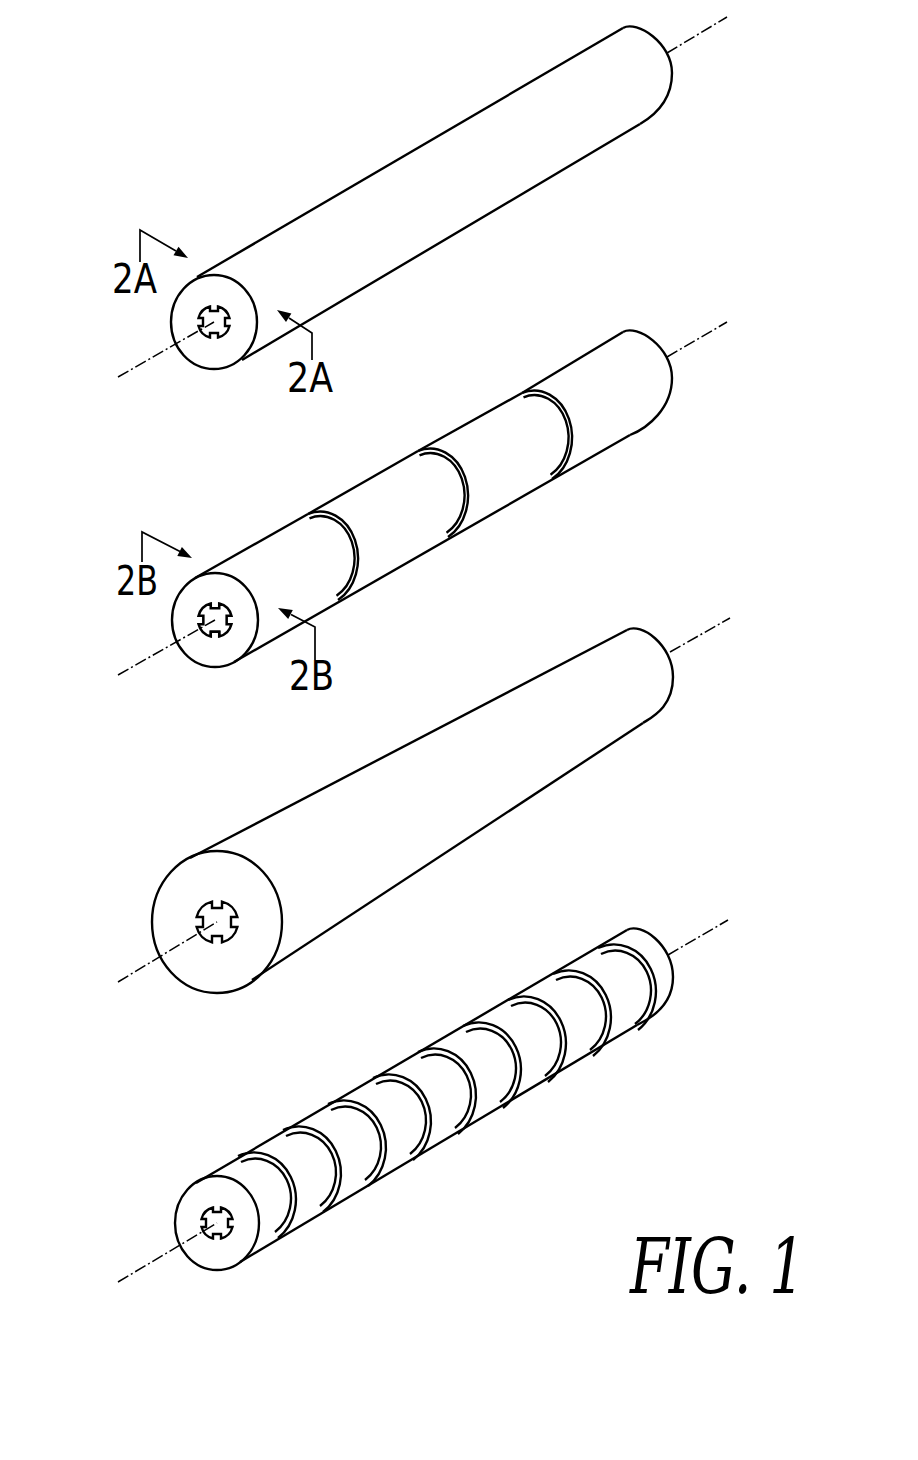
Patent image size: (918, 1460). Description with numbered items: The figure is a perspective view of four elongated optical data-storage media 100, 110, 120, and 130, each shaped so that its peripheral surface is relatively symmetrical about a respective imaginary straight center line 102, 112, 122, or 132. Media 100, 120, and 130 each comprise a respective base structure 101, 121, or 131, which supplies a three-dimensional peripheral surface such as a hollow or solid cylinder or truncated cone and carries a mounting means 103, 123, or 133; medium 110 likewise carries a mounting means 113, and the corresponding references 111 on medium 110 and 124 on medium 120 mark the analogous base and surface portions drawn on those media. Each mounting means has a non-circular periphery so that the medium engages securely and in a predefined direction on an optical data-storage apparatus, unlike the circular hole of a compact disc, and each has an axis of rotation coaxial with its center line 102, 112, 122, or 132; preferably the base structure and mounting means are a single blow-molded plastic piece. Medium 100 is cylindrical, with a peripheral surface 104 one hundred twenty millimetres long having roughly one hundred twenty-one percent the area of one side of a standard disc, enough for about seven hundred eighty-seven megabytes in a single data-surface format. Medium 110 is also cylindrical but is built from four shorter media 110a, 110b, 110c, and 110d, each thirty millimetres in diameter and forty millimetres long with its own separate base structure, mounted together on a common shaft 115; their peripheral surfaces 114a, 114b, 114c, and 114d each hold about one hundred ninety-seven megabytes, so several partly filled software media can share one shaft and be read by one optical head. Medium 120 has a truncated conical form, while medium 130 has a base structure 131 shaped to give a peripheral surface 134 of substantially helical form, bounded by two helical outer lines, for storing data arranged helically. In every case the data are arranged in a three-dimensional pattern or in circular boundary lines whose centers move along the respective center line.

The optical data-storage medium 100 is at (424, 212).
The base structure 101 is at (180, 322).
The imaginary straight center line 102 is at (397, 212).
The mounting means 103 is at (220, 276).
The peripheral surface 104 is at (434, 193).
The optical data-storage medium 110 is at (420, 500).
The shorter elongated-length optical data-storage medium 110a is at (254, 518).
The shorter elongated-length optical data-storage medium 110b is at (363, 458).
The shorter elongated-length optical data-storage medium 110c is at (470, 397).
The shorter elongated-length optical data-storage medium 110d is at (574, 337).
The outer surface of shaft 110 111 is at (186, 620).
The imaginary straight center line 112 is at (397, 518).
The mounting means 113 is at (221, 576).
The peripheral surface 114a is at (371, 572).
The peripheral surface 114b is at (480, 513).
The peripheral surface 114c is at (567, 457).
The peripheral surface 114d is at (675, 390).
The common shaft 115 is at (219, 675).
The optical data-storage medium 120 is at (430, 812).
The base structure 121 is at (194, 922).
The imaginary straight center line 122 is at (399, 812).
The mounting means 123 is at (205, 872).
The cylindrical wall of shaft 120 124 is at (431, 804).
The optical data-storage medium 130 is at (436, 1114).
The base structure 131 is at (189, 1217).
The imaginary straight center line 132 is at (400, 1114).
The mounting means 133 is at (215, 1179).
The peripheral surface 134 is at (434, 1095).